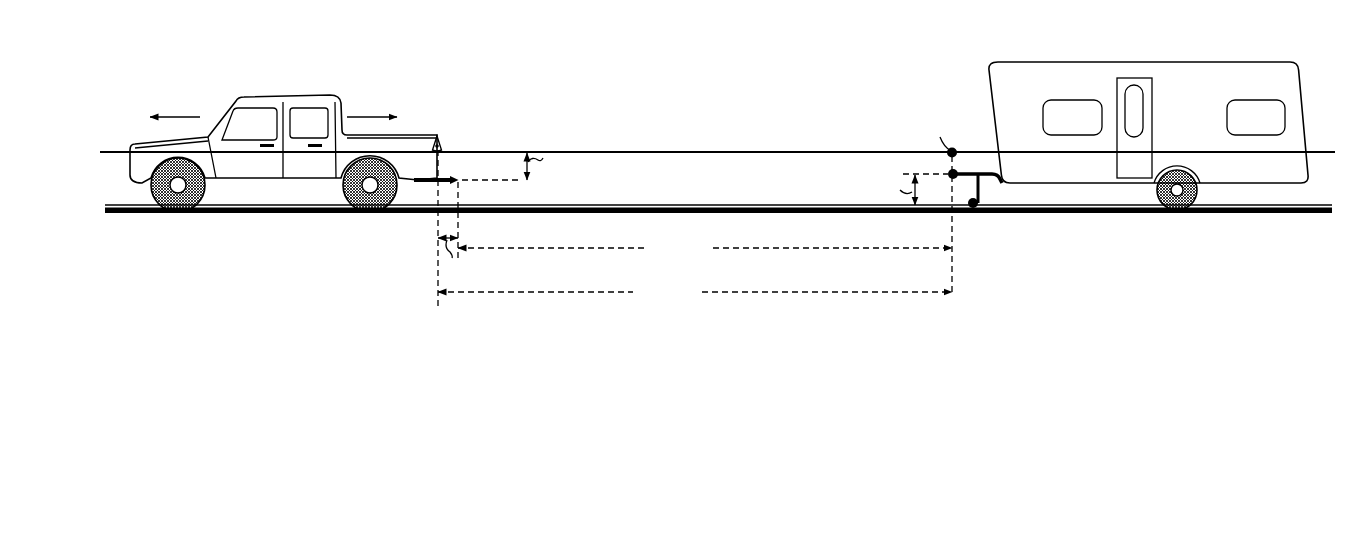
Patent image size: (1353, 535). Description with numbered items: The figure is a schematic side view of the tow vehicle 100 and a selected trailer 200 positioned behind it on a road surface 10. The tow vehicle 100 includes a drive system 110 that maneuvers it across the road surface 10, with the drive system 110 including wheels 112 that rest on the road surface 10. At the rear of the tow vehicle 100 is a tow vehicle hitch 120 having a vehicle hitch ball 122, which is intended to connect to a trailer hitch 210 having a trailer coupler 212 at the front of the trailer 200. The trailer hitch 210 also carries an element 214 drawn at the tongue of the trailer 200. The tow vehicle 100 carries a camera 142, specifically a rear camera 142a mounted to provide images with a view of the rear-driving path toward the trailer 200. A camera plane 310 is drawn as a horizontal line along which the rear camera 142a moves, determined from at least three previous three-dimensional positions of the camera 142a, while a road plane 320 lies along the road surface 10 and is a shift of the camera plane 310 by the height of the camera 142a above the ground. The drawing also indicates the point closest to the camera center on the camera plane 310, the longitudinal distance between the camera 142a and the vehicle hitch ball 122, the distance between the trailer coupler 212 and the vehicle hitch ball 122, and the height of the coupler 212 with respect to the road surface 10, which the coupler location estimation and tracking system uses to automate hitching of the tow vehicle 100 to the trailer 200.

The road surface 10 is at (847, 214).
The tow vehicle 100 is at (269, 168).
The drive system 110 is at (180, 214).
The wheel 112 is at (365, 214).
The tow vehicle hitch 120 is at (440, 176).
The vehicle hitch ball 122 is at (463, 174).
The camera 142 is at (465, 120).
The rear camera 142a is at (441, 141).
The trailer 200 is at (1214, 118).
The trailer hitch 210 is at (1006, 231).
The trailer coupler 212 is at (954, 181).
The tongue jack 214 is at (1013, 207).
The camera plane 310 is at (720, 151).
The road plane 320 is at (795, 204).